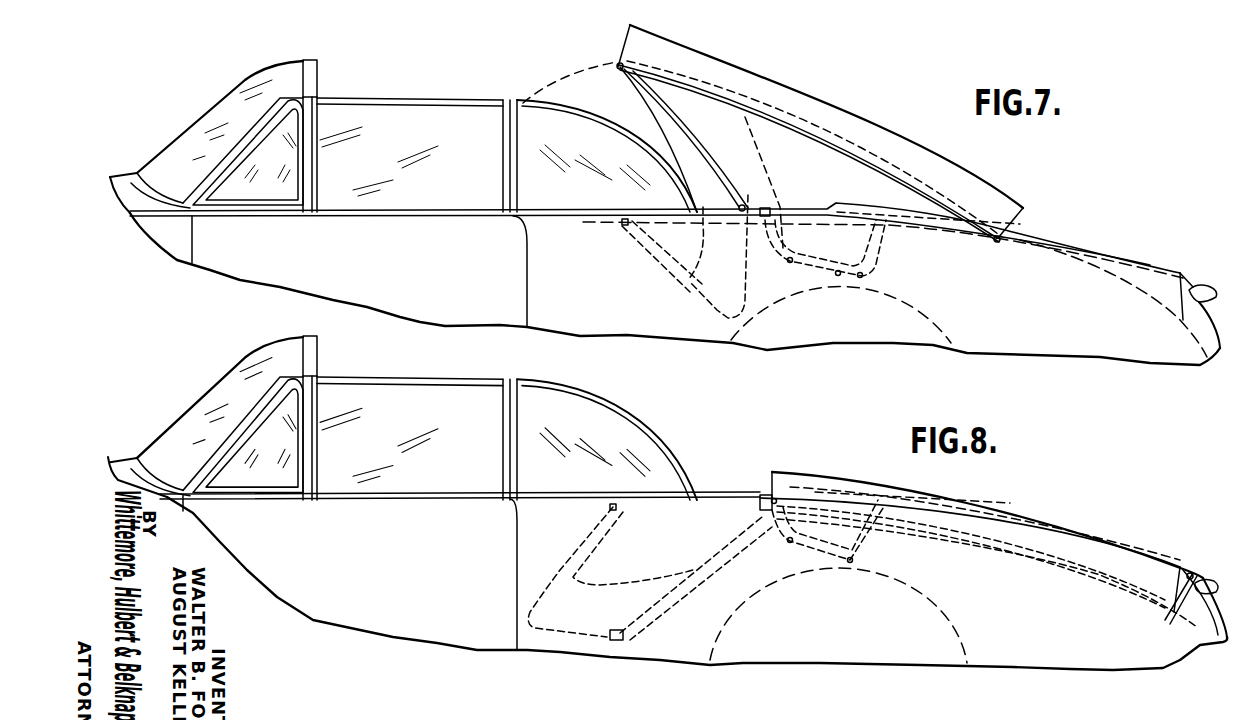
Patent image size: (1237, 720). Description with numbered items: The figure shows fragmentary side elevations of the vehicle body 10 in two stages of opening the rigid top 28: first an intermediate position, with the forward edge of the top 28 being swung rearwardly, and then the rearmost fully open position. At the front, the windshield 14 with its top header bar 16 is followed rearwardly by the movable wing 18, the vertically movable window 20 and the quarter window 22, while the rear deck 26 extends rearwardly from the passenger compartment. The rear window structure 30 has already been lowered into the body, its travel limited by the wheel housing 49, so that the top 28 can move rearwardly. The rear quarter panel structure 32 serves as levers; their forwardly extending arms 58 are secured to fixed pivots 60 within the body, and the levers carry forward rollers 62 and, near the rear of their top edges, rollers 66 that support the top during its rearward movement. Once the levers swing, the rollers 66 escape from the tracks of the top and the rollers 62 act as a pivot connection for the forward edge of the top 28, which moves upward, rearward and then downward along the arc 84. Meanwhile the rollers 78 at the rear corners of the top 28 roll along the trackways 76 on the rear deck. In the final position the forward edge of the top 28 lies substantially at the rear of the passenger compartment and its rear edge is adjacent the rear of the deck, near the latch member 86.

In FIG. 8, the body 10 is at (641, 649).
In FIG. 7, the windshield 14 is at (220, 106).
In FIG. 8, the windshield 14 is at (242, 368).
In FIG. 7, the top windshield header bar 16 is at (317, 86).
In FIG. 8, the top windshield header bar 16 is at (310, 366).
In FIG. 8, the movable wing 18 is at (1200, 569).
In FIG. 7, the vertically movable window 20 is at (402, 141).
In FIG. 8, the vertically movable window 20 is at (434, 416).
In FIG. 7, the quarter window 22 is at (559, 141).
In FIG. 8, the quarter window 22 is at (552, 431).
In FIG. 7, the rear deck 26 is at (900, 212).
In FIG. 8, the rear deck 26 is at (870, 493).
In FIG. 7, the top 28 is at (747, 62).
In FIG. 8, the top 28 is at (977, 498).
In FIG. 7, the rear window structure 30 is at (800, 207).
In FIG. 8, the rear window structure 30 is at (803, 493).
In FIG. 7, the rear quarter panel structure 32 is at (697, 290).
In FIG. 8, the rear quarter panel structure 32 is at (695, 577).
In FIG. 7, the wheel housing 49 is at (947, 328).
In FIG. 8, the wheel housing 49 is at (948, 623).
In FIG. 7, the forwardly extending arms 58 is at (650, 257).
In FIG. 8, the forwardly extending arms 58 is at (580, 552).
In FIG. 7, the fixed pivots 60 is at (624, 228).
In FIG. 8, the fixed pivots 60 is at (613, 511).
In FIG. 7, the rollers 62 is at (618, 60).
In FIG. 8, the rollers 62 is at (777, 467).
In FIG. 7, the rollers 66 is at (744, 204).
In FIG. 8, the rollers 66 is at (612, 648).
In FIG. 7, the trackways 76 is at (1060, 253).
In FIG. 8, the trackways 76 is at (1102, 553).
In FIG. 7, the rollers 78 is at (1000, 247).
In FIG. 7, the arc 84 is at (553, 77).
In FIG. 7, the latch 86 is at (1198, 290).
In FIG. 8, the latch 86 is at (1218, 585).